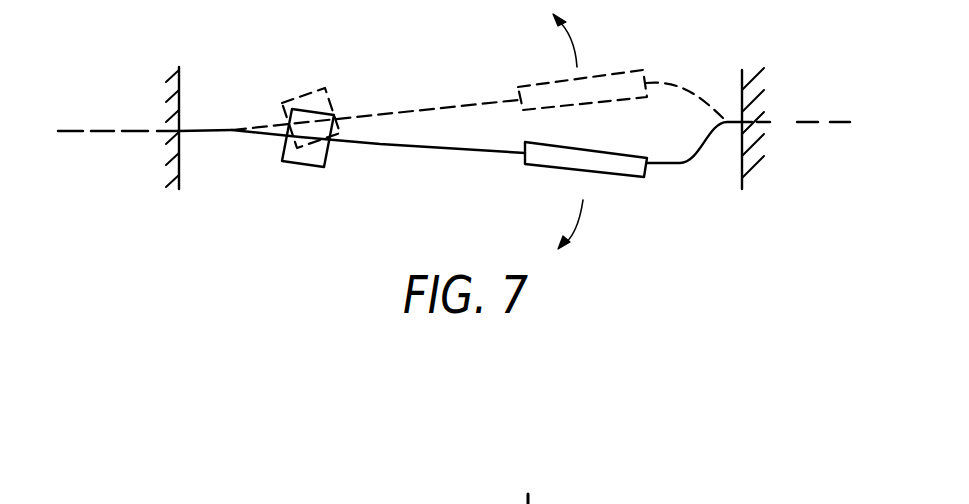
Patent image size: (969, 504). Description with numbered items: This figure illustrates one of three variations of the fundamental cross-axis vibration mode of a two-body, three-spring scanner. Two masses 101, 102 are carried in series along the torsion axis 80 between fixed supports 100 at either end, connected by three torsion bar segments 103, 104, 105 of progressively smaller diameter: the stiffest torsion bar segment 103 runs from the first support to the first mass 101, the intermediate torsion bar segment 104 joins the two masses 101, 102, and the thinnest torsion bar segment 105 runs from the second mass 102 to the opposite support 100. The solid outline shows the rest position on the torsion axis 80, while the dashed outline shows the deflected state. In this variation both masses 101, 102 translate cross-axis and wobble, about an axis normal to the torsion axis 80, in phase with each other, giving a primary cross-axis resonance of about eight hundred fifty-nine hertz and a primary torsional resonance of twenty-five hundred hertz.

The fixed support wall 100 is at (170, 80).
The torsion axis 80 is at (810, 124).
The mass 101 is at (317, 152).
The mass 102 is at (602, 165).
The torsion bar segment 103 is at (199, 131).
The torsion bar segment 104 is at (392, 147).
The torsion bar segment 105 is at (685, 164).